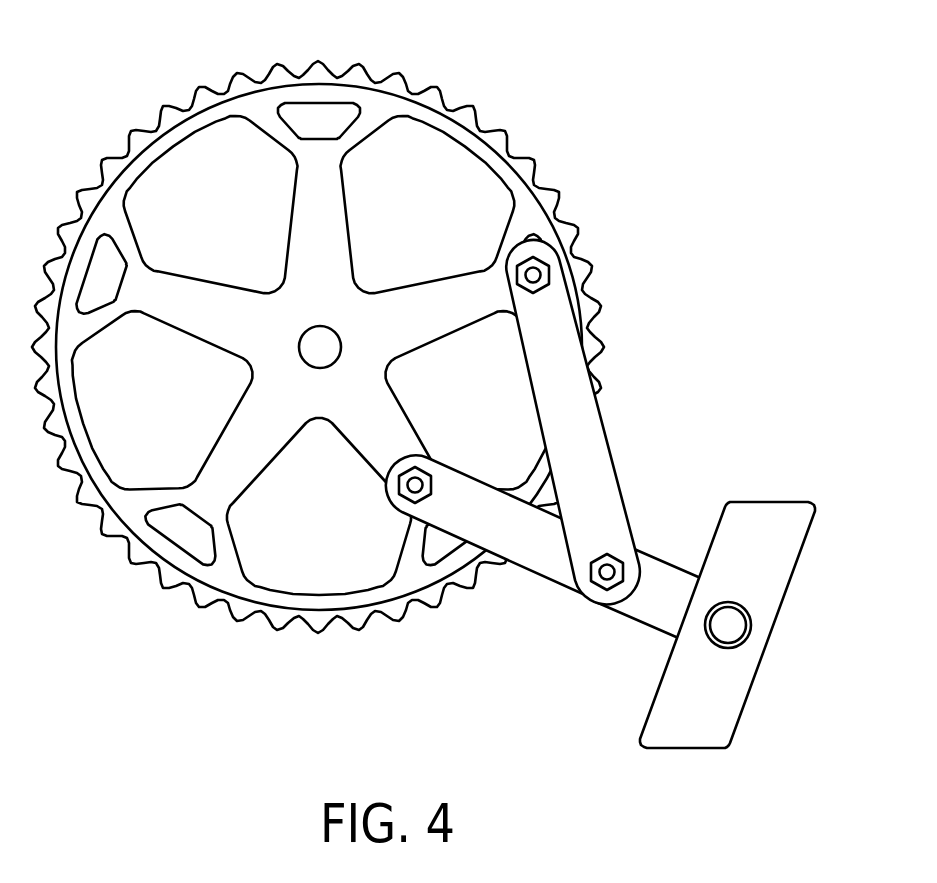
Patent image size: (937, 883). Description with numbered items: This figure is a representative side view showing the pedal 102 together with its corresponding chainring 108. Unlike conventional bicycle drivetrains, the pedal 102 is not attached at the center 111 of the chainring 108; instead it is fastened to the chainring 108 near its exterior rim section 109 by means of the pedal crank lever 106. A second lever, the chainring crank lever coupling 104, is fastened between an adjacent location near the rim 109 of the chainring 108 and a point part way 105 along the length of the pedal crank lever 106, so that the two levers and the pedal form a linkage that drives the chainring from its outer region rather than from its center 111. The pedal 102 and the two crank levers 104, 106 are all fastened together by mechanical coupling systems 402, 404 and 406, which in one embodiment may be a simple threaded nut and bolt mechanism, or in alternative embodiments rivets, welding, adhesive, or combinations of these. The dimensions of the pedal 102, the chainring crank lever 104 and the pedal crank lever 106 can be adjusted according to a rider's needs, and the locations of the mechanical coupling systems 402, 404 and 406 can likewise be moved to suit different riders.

The pedal 102 is at (757, 675).
The chainring crank lever coupling 104 is at (610, 452).
The part way location along pedal crank lever 105 is at (650, 587).
The pedal crank lever 106 is at (550, 577).
The chainring 108 is at (398, 73).
The exterior rim section 109 is at (523, 210).
The center 111 is at (371, 407).
The mechanical coupling system 402 is at (542, 260).
The mechanical coupling system 404 is at (400, 487).
The mechanical coupling system 406 is at (603, 593).